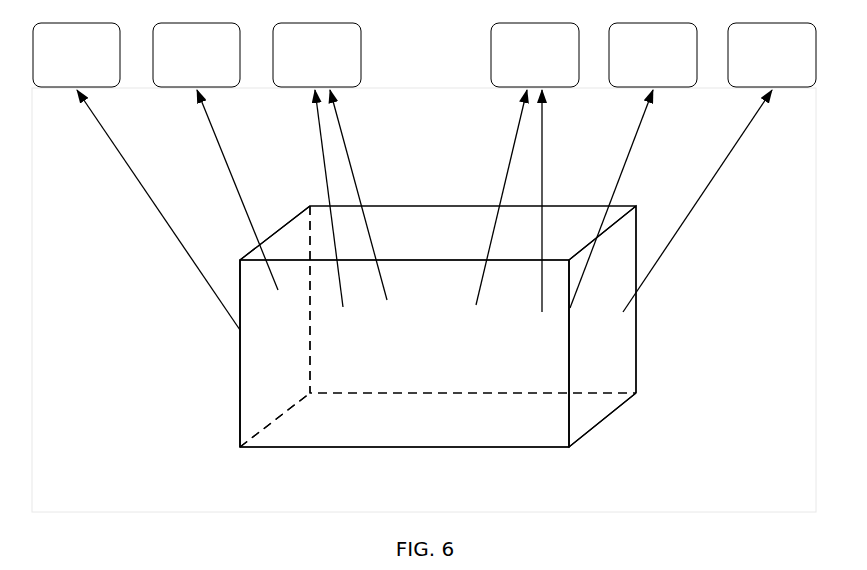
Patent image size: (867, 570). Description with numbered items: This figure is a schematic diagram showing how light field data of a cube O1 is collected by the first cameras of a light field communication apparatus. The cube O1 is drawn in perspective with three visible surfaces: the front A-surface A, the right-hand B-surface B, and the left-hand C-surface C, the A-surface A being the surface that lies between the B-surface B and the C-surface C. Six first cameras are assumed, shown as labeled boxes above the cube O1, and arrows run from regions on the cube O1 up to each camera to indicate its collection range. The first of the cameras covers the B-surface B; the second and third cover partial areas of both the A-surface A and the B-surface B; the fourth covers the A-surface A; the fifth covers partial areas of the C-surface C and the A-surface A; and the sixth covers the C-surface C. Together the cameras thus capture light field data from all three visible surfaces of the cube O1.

The cube O1 is at (438, 343).
The A-surface A is at (404, 353).
The B-surface B is at (602, 326).
The C-surface C is at (275, 326).